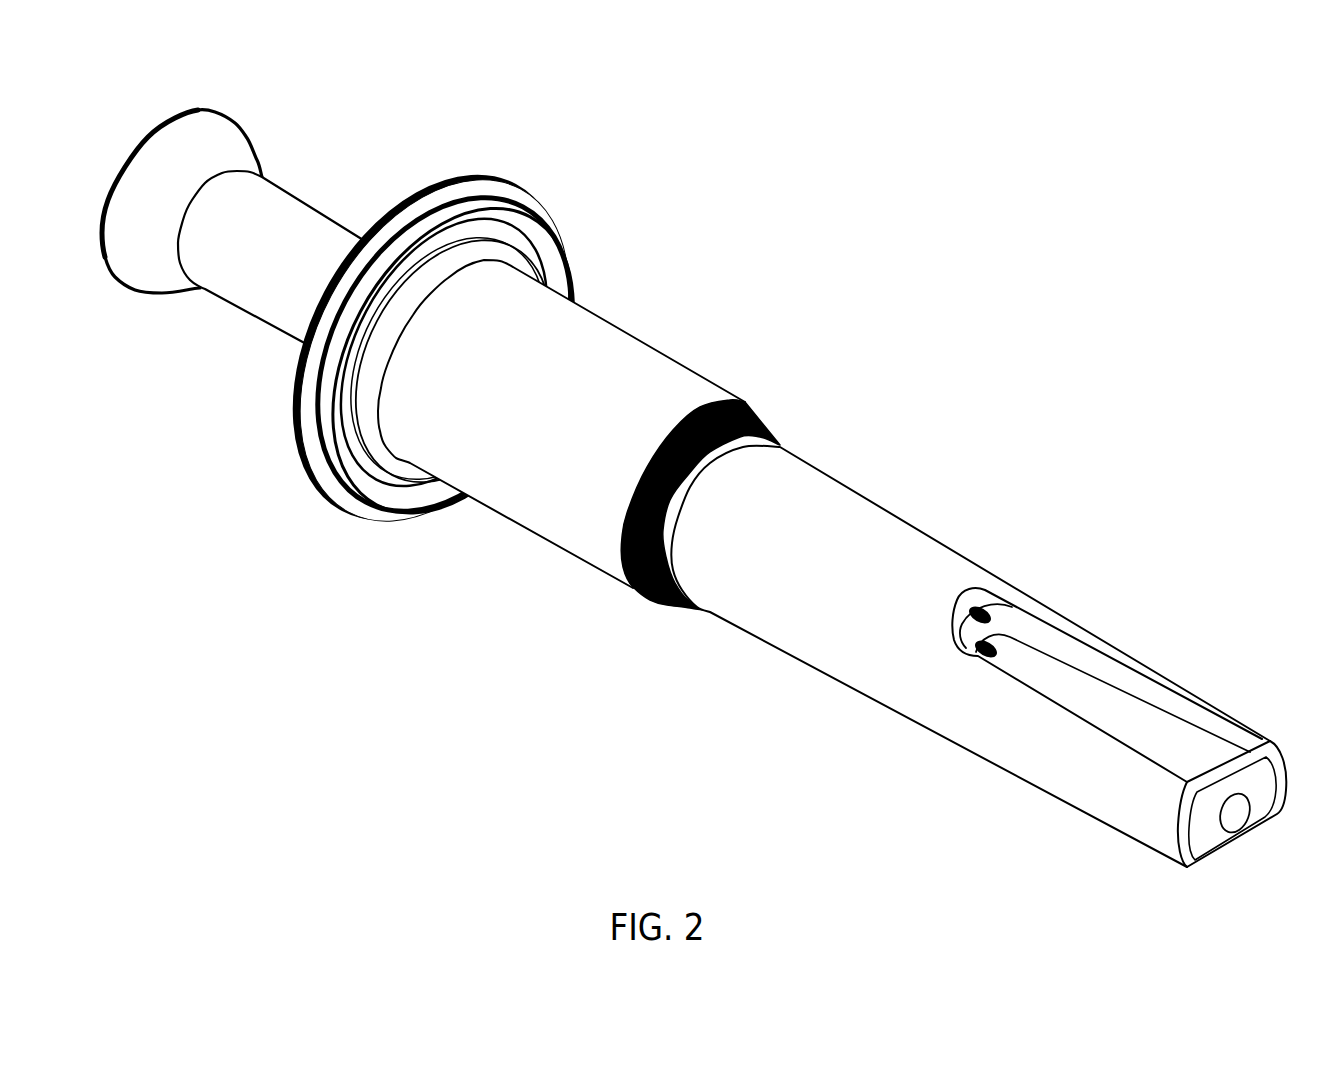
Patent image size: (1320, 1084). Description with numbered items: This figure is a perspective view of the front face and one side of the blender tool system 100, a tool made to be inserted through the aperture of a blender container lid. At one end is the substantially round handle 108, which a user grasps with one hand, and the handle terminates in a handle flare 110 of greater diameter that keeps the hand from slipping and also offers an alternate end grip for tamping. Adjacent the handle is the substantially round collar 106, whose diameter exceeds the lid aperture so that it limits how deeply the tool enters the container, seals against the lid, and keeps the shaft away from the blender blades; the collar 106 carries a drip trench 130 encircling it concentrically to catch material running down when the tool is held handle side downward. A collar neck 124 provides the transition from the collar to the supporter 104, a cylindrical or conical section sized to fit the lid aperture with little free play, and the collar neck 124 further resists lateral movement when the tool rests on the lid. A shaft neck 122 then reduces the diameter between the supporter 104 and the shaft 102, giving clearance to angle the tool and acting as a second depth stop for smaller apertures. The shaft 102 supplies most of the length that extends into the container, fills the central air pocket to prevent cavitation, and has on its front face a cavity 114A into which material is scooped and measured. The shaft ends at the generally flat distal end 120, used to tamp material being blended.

The blender tool system 100 is at (193, 88).
The shaft 102 is at (978, 656).
The supporter 104 is at (561, 424).
The collar 106 is at (322, 497).
The handle 108 is at (273, 258).
The handle flare 110 is at (182, 201).
The cavity 114A is at (1107, 712).
The distal end 120 is at (1263, 800).
The shaft neck 122 is at (640, 587).
The collar neck 124 is at (370, 420).
The drip trench 130 is at (525, 258).